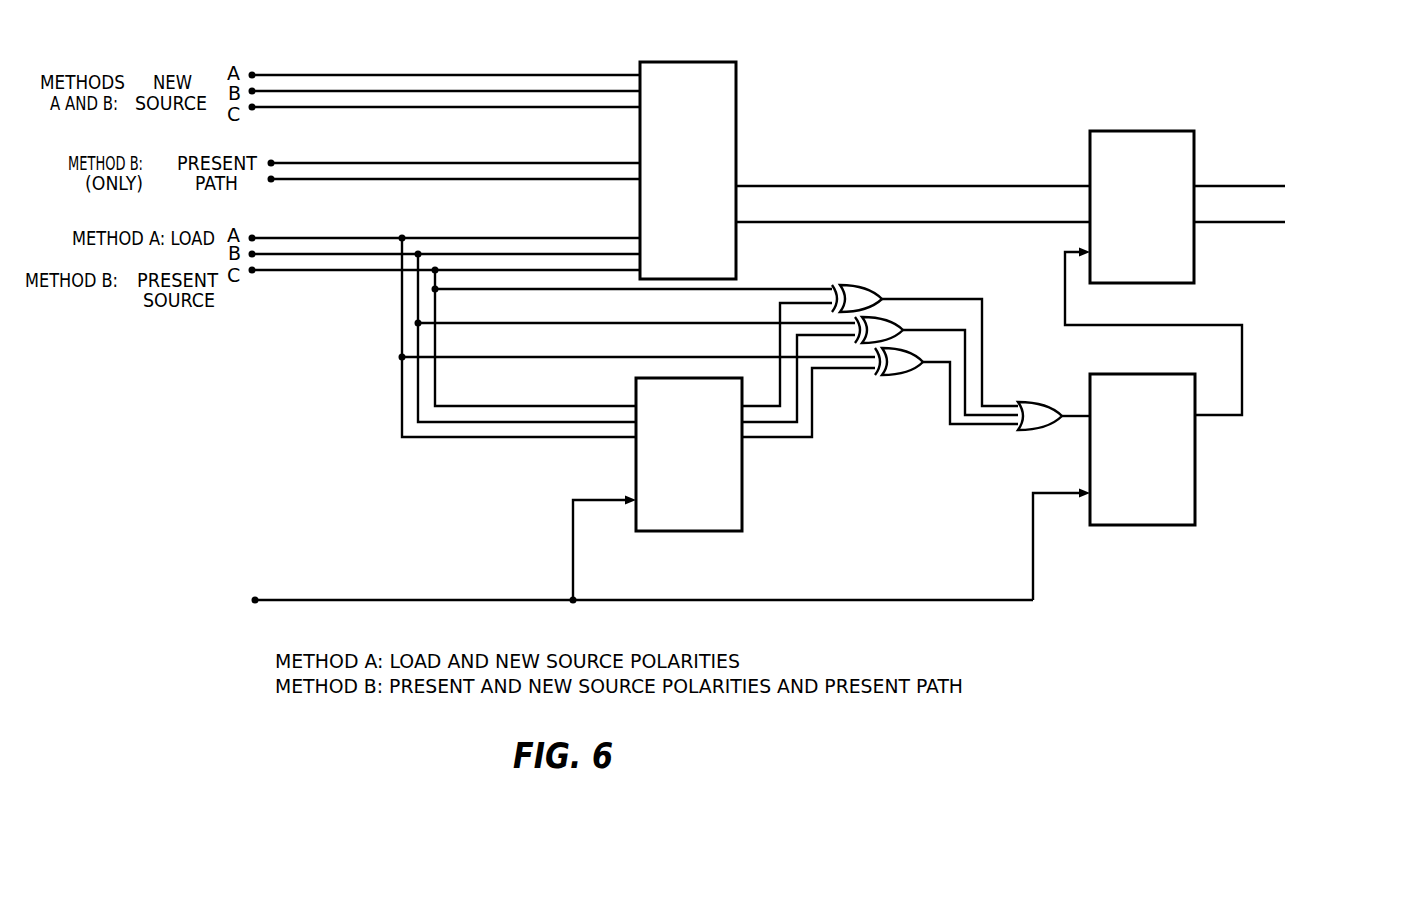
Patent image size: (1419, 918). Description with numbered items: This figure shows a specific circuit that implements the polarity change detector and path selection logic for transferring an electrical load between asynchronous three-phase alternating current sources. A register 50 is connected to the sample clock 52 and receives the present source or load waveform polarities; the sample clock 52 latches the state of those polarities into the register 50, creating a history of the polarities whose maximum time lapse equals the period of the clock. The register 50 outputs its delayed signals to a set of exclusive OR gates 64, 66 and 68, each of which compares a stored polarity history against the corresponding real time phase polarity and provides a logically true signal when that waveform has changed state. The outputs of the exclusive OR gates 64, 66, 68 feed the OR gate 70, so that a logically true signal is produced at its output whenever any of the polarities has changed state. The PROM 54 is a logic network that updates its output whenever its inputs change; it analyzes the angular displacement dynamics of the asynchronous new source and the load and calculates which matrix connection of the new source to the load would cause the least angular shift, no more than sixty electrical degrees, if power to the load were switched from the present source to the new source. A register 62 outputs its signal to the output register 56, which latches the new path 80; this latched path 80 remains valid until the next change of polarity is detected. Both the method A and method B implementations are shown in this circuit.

The register 50 is at (730, 495).
The sampling clock 52 is at (348, 600).
The PROM 54 is at (730, 152).
The output register 56 is at (1180, 254).
The register 62 is at (1180, 483).
The exclusive OR gate 64 is at (851, 296).
The exclusive OR gate 66 is at (886, 331).
The exclusive OR gate 68 is at (899, 370).
The OR gate 70 is at (1039, 420).
The new path 80 is at (1294, 221).